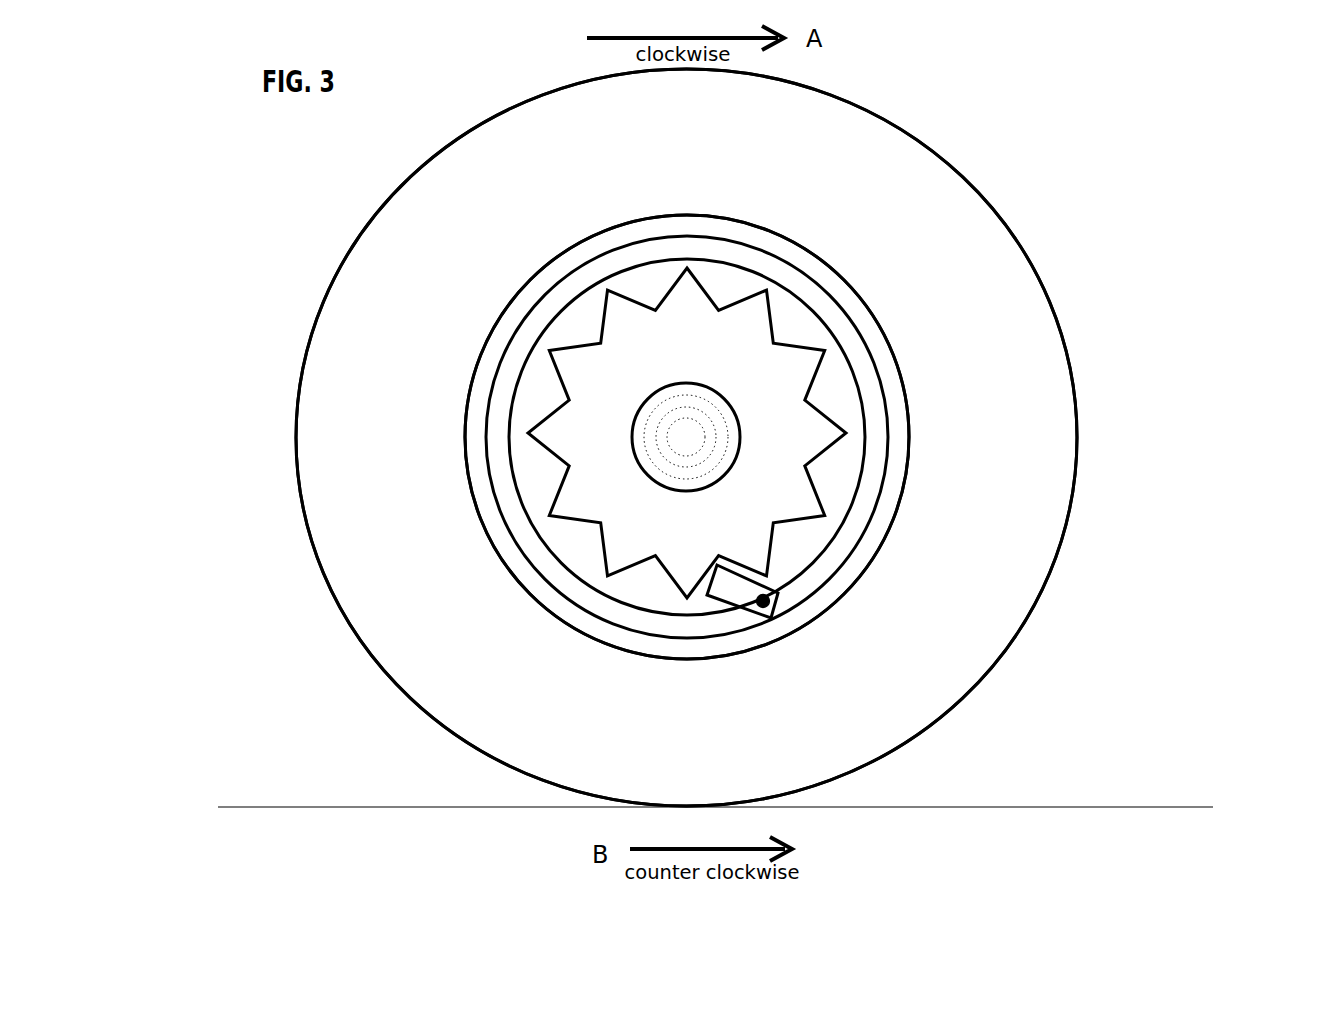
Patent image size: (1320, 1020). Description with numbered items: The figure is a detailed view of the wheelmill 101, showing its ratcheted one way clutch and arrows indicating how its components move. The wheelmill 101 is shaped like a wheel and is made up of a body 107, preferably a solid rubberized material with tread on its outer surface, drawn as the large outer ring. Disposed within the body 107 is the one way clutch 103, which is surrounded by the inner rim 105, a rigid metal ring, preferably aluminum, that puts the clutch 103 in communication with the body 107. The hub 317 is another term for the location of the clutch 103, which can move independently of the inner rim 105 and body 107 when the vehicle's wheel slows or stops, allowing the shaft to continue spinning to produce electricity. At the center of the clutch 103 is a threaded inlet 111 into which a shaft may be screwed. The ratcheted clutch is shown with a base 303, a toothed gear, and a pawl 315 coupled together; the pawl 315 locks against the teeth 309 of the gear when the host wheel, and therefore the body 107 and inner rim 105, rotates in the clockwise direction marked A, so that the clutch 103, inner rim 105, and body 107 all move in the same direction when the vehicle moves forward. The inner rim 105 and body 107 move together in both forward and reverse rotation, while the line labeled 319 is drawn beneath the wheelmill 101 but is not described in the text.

The wheelmill 101 is at (303, 232).
The one way clutch 103 is at (493, 520).
The inner rim 105 is at (707, 648).
The body 107 is at (1025, 367).
The threaded inlet 111 is at (725, 390).
The base 303 is at (855, 355).
The teeth 309 is at (802, 502).
The pawl 315 is at (773, 597).
The hub 317 is at (838, 480).
The ground surface 319 is at (1015, 808).